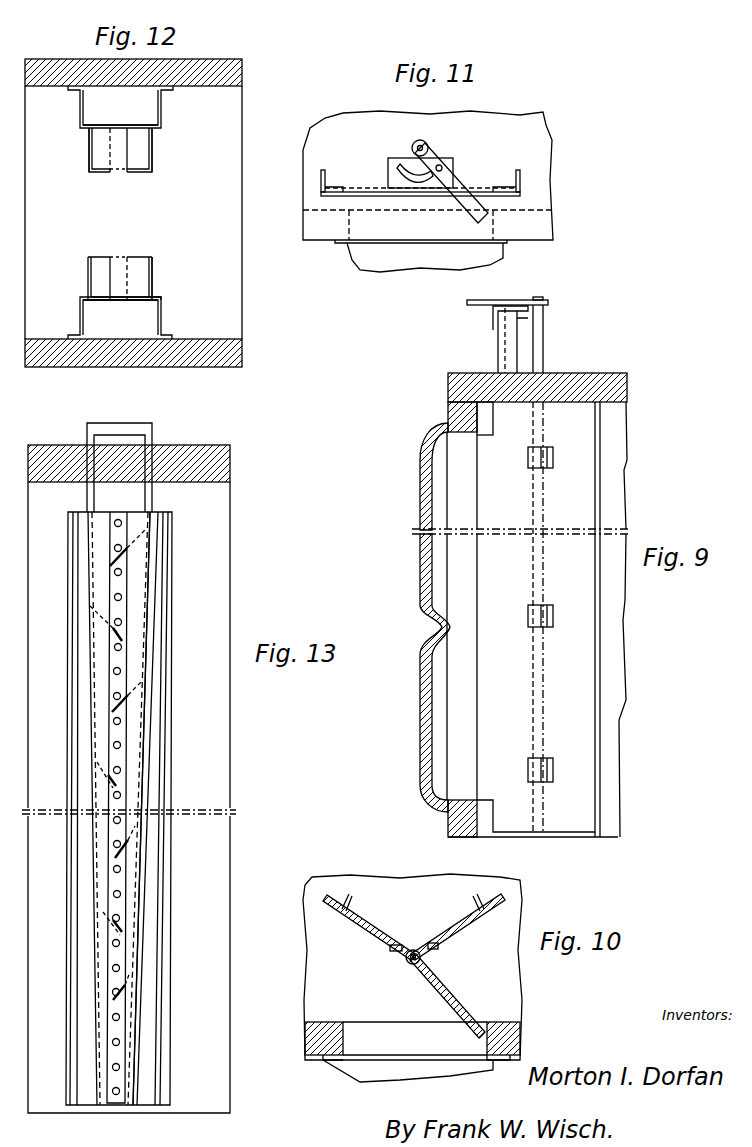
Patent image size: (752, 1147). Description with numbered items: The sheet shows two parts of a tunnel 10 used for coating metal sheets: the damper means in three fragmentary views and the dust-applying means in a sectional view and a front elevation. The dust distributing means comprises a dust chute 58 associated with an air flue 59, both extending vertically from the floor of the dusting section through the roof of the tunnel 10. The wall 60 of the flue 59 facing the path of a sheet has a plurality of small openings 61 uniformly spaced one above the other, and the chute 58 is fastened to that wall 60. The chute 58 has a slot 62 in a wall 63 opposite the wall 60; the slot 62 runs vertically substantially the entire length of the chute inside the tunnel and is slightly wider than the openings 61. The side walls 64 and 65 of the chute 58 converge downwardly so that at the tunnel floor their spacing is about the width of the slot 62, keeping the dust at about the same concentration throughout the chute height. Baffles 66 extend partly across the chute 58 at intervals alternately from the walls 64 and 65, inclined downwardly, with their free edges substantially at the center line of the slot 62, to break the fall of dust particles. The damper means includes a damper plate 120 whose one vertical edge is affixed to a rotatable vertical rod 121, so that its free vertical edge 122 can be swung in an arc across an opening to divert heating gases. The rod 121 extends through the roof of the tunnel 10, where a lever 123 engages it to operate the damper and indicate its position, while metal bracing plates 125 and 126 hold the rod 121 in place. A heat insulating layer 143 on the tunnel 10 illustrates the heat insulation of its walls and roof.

In FIG. 12, the tunnel 10 is at (220, 68).
In FIG. 13, the tunnel 10 is at (191, 447).
In FIG. 11, the tunnel 10 is at (527, 238).
In FIG. 9, the tunnel 10 is at (600, 375).
In FIG. 10, the tunnel 10 is at (325, 1022).
In FIG. 12, the dust chute 58 is at (140, 150).
In FIG. 13, the dust chute 58 is at (146, 437).
In FIG. 12, the air flue 59 is at (161, 111).
In FIG. 13, the air flue 59 is at (87, 428).
In FIG. 12, the wall of the flue 60 is at (149, 298).
In FIG. 12, the openings 61 is at (121, 127).
In FIG. 13, the openings 61 is at (118, 650).
In FIG. 12, the slot 62 is at (119, 173).
In FIG. 13, the slot 62 is at (108, 733).
In FIG. 12, the wall of the chute 63 is at (147, 258).
In FIG. 12, the side wall of the chute 64 is at (89, 148).
In FIG. 12, the side wall of the chute 65 is at (152, 166).
In FIG. 13, the side wall of the chute 65 is at (150, 712).
In FIG. 13, the baffles 66 is at (112, 563).
In FIG. 9, the damper plate 120 is at (480, 490).
In FIG. 10, the damper plate 120 is at (468, 1007).
In FIG. 9, the rotatable vertical rod 121 is at (545, 320).
In FIG. 10, the rotatable vertical rod 121 is at (411, 965).
In FIG. 9, the free vertical edge 122 is at (472, 571).
In FIG. 10, the free vertical edge 122 is at (483, 1032).
In FIG. 11, the lever 123 is at (465, 178).
In FIG. 9, the lever 123 is at (480, 306).
In FIG. 10, the bracing plate 125 is at (457, 930).
In FIG. 10, the bracing plate 126 is at (367, 932).
In FIG. 9, the heat insulating layer 143 is at (420, 450).